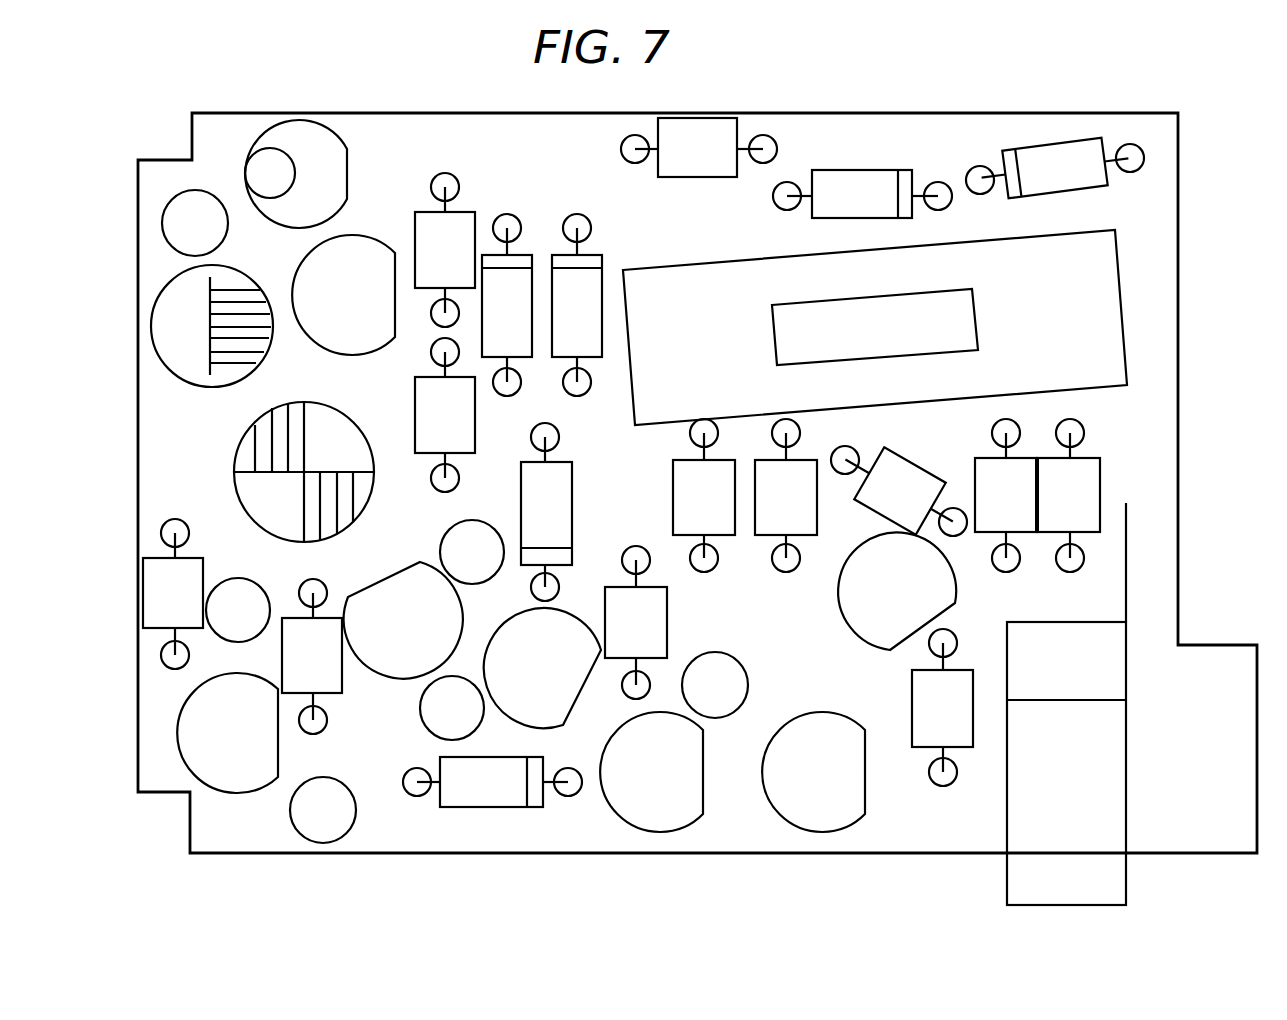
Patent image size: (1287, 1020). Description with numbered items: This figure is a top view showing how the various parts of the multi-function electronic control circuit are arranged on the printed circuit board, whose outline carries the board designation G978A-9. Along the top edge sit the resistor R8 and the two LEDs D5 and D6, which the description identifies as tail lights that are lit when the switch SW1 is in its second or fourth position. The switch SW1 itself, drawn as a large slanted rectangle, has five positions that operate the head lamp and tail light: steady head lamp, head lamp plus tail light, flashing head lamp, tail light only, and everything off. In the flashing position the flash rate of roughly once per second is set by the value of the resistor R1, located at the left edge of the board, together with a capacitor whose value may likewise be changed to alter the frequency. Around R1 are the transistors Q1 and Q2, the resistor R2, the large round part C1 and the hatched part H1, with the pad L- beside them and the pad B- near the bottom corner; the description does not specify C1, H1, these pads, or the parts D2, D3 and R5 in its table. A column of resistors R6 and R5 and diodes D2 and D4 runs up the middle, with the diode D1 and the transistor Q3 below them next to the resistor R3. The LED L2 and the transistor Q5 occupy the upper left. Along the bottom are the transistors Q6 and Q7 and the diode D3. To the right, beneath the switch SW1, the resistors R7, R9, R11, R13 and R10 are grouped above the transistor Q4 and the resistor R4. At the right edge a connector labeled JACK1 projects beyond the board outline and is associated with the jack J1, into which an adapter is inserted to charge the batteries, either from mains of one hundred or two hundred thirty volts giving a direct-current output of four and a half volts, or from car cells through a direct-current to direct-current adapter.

The printed circuit board G978A-9 is at (697, 483).
The LED L2 is at (320, 174).
The capacitor C1 is at (212, 348).
The transistor Q5 is at (343, 310).
The component H1 is at (304, 472).
The lamp negative terminal pad L- is at (238, 587).
The transistor Q1 is at (400, 608).
The resistor R1 is at (173, 594).
The resistor R2 is at (312, 656).
The transistor Q2 is at (227, 753).
The battery negative terminal pad B- is at (340, 811).
The diode D3 is at (492, 782).
The resistor R6 is at (445, 250).
The resistor R5 is at (445, 415).
The diode D2 is at (507, 305).
The diode D4 is at (577, 305).
The diode D1 is at (546, 512).
The transistor Q3 is at (548, 670).
The resistor R3 is at (636, 622).
The transistor Q6 is at (671, 777).
The transistor Q7 is at (833, 778).
The resistor R8 is at (699, 147).
The tail light LED D6 is at (862, 194).
The tail light LED D5 is at (1055, 168).
The switch SW1 is at (875, 327).
The resistor R7 is at (704, 495).
The resistor R9 is at (786, 495).
The resistor R11 is at (898, 491).
The resistor R13 is at (1006, 495).
The resistor R10 is at (1068, 495).
The transistor Q4 is at (920, 591).
The resistor R4 is at (942, 707).
The jack J1 is at (1108, 562).
The jack connector JACK1 is at (1066, 763).